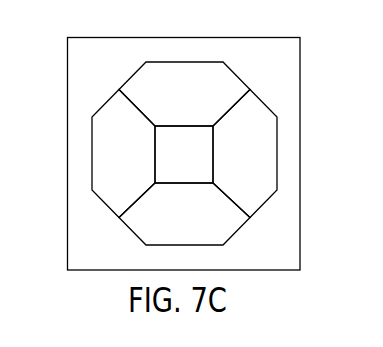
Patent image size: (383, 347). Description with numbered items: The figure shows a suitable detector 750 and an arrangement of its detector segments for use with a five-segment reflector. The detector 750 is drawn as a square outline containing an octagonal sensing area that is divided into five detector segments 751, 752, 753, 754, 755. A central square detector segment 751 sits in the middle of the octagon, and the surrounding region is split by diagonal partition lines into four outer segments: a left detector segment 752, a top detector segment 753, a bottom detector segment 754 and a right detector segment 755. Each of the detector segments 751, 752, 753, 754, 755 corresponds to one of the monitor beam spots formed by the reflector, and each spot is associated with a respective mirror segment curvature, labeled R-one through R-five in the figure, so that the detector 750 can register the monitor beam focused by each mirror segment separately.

The detector 750 is at (68, 62).
The detector segment 751 is at (159, 180).
The detector segment 752 is at (135, 188).
The detector segment 753 is at (199, 120).
The detector segment 754 is at (139, 232).
The detector segment 755 is at (258, 188).